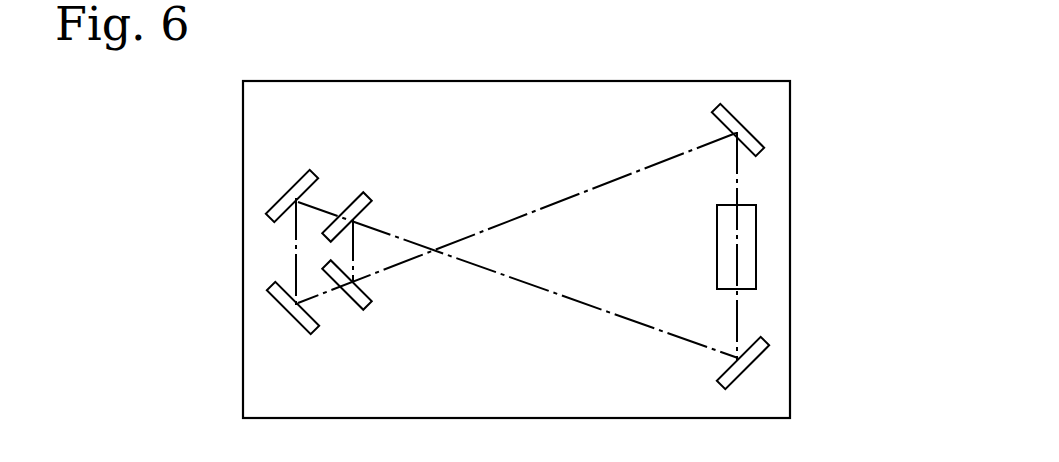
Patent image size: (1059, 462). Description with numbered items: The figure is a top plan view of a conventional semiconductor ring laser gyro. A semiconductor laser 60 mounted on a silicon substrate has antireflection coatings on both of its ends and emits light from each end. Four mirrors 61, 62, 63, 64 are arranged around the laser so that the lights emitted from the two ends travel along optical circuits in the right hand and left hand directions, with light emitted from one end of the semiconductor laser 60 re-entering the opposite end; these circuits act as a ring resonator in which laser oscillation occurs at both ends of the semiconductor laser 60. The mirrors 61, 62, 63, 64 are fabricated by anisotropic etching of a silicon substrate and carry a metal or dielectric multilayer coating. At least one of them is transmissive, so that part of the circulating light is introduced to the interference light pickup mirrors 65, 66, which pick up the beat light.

The semiconductor laser 60 is at (749, 250).
The mirror 61 is at (755, 134).
The mirror 62 is at (763, 344).
The mirror 63 is at (323, 233).
The mirror 64 is at (323, 266).
The interference light pickup mirror 65 is at (278, 202).
The interference light pickup mirror 66 is at (286, 313).